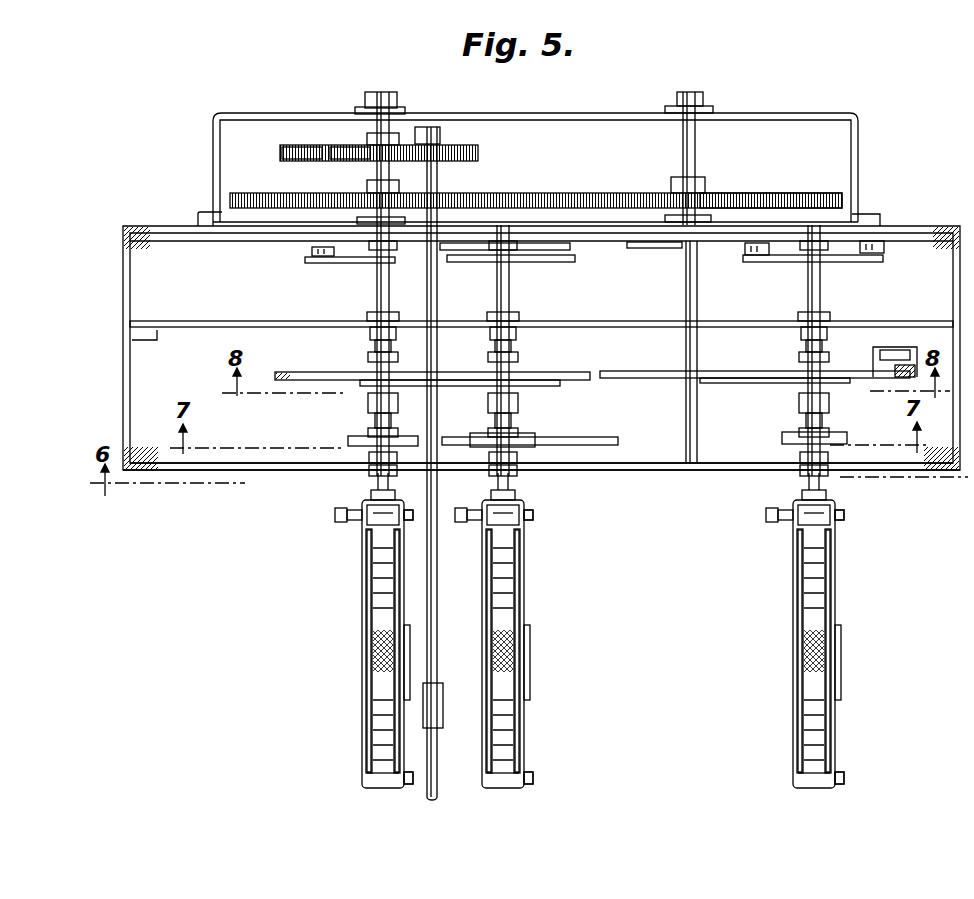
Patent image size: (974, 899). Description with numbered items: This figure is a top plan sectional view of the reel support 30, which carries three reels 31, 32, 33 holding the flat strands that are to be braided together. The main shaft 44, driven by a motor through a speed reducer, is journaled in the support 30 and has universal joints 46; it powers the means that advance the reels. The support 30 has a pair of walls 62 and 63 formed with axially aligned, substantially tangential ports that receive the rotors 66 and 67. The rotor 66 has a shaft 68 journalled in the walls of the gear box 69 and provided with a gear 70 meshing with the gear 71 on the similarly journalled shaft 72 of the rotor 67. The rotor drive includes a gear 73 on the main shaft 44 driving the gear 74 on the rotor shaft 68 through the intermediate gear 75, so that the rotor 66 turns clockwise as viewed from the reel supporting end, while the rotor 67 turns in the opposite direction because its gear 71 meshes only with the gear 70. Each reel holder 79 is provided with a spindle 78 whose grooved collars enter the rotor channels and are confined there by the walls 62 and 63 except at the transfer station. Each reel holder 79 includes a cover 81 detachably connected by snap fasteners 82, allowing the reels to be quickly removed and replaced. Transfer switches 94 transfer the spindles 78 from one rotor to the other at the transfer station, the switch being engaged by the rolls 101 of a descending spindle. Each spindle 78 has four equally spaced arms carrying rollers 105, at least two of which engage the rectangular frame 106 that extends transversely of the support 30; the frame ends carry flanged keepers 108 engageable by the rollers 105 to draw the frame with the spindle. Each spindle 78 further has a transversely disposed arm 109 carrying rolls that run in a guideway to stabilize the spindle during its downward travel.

The support 30 is at (121, 357).
The reel 31 is at (383, 683).
The reel 32 is at (504, 713).
The reel 33 is at (815, 625).
The main shaft 44 is at (437, 305).
The universal joint 46 is at (440, 690).
The wall 62 is at (150, 465).
The wall 63 is at (148, 338).
The rotor 66 is at (378, 372).
The rotor 67 is at (698, 420).
The rotor shaft 68 is at (387, 125).
The gear box 69 is at (513, 115).
The gear 70 is at (474, 195).
The gear 71 is at (777, 195).
The shaft 72 is at (698, 160).
The gear 73 is at (478, 150).
The gear 74 is at (348, 152).
The intermediate gear 75 is at (297, 152).
The spindle 78 is at (376, 292).
The reel holder 79 is at (362, 558).
The cover 81 is at (404, 562).
The snap fastener 82 is at (413, 515).
The transfer switch 94 is at (556, 437).
The roll 101 is at (356, 436).
The roller 105 is at (305, 372).
The rectangular frame 106 is at (620, 372).
The flanged keeper 108 is at (876, 360).
The arm 109 is at (780, 260).